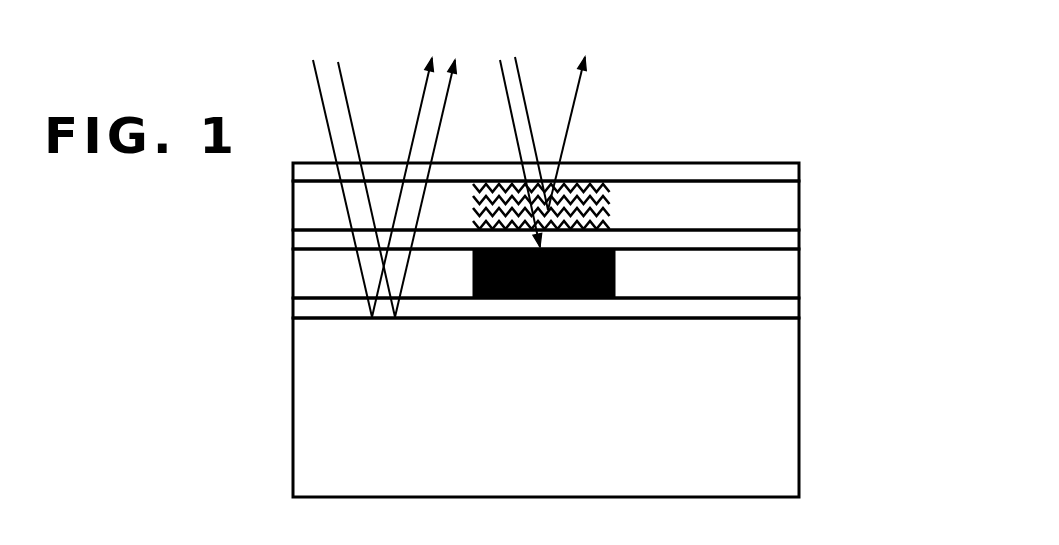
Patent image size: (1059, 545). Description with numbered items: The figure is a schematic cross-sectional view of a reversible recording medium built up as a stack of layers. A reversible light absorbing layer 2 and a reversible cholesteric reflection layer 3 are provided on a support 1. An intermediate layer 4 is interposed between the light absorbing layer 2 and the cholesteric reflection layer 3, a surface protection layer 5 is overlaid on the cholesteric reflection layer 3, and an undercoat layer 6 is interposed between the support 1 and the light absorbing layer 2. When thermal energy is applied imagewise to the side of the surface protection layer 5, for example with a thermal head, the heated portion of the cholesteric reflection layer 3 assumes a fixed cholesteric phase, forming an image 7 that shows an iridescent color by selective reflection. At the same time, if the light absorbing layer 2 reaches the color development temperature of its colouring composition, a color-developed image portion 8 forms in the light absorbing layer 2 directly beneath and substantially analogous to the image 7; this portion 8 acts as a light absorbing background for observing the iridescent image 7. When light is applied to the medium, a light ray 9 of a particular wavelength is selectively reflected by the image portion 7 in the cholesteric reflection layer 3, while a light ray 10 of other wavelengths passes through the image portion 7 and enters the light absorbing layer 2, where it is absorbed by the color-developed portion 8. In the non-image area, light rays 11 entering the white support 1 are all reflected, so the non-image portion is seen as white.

The support 1 is at (780, 436).
The reversible light absorbing layer 2 is at (783, 280).
The reversible cholesteric reflection layer 3 is at (787, 206).
The intermediate layer 4 is at (793, 238).
The surface protection layer 5 is at (790, 171).
The undercoat layer 6 is at (790, 310).
The image 7 is at (594, 163).
The color-developed image portion 8 is at (616, 272).
The light ray 9 is at (518, 70).
The light ray 10 is at (500, 73).
The light rays 11 is at (313, 78).